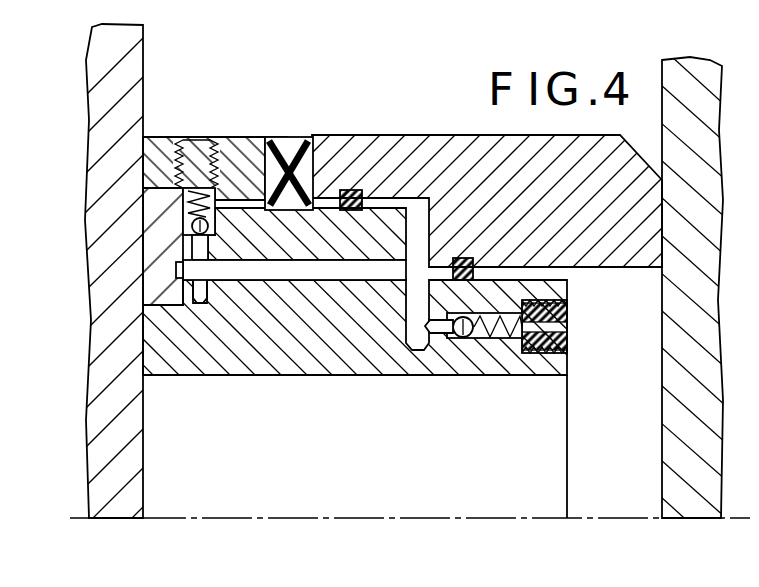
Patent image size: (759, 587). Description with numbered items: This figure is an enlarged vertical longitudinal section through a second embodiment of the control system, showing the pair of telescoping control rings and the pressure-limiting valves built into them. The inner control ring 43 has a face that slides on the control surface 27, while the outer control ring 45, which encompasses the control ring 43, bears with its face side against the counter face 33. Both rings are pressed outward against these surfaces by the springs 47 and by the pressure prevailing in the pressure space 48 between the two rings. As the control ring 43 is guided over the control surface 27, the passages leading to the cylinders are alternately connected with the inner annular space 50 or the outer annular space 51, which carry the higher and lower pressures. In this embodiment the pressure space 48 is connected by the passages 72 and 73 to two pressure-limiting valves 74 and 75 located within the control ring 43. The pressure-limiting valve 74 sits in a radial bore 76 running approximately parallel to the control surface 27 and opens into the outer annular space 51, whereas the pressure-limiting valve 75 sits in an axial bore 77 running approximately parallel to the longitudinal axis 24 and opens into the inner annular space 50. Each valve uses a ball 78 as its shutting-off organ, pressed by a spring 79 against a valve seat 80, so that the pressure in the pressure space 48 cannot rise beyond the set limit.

The longitudinal axis 24 is at (236, 520).
The control surface 27 is at (148, 500).
The counter face 33 is at (639, 312).
The control ring 43 is at (209, 378).
The control ring 45 is at (457, 160).
The spring 47 is at (270, 137).
The pressure space 48 is at (419, 198).
The inner annular space 50 is at (307, 435).
The outer annular space 51 is at (341, 75).
The passage 72 is at (256, 275).
The passage 73 is at (403, 340).
The pressure-limiting valve 74 is at (185, 194).
The pressure-limiting valve 75 is at (497, 342).
The radial bore 76 is at (200, 290).
The axial bore 77 is at (442, 330).
The ball 78 is at (185, 232).
The spring 79 is at (185, 213).
The valve seat 80 is at (178, 274).